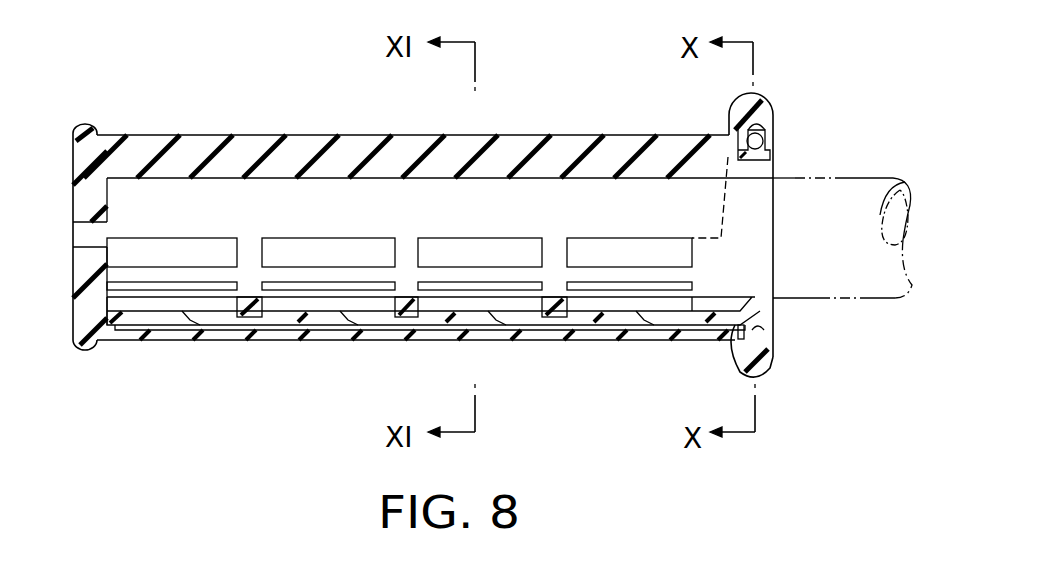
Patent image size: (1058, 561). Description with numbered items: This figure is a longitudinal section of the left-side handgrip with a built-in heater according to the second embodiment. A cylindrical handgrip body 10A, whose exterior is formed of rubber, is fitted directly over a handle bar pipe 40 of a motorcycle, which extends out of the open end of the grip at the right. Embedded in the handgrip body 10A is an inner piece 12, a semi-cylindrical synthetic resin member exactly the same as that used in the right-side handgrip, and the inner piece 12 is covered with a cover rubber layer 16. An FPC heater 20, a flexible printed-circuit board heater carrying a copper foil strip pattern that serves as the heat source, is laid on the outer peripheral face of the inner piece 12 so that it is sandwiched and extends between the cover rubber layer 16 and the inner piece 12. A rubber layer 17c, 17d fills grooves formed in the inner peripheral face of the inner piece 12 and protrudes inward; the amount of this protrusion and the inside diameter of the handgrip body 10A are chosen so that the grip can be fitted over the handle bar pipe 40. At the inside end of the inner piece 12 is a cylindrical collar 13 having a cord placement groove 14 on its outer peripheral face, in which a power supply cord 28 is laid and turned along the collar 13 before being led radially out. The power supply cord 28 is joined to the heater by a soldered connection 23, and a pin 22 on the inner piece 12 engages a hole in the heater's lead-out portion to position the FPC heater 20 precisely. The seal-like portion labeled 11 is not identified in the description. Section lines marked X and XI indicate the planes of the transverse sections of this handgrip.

The cylindrical handgrip body 10A is at (222, 124).
The seal cap 11 is at (758, 96).
The inner piece 12 is at (343, 330).
The cylindrical collar 13 is at (742, 122).
The cord placement groove 14 is at (770, 128).
The cover rubber layer 16 is at (233, 342).
The rubber layer 17c is at (510, 273).
The rubber layer 17d is at (402, 247).
The FPC heater 20 is at (575, 330).
The pin 22 is at (736, 338).
The soldered connection 23 is at (770, 355).
The power supply cord 28 is at (763, 139).
The handle bar pipe 40 is at (845, 178).